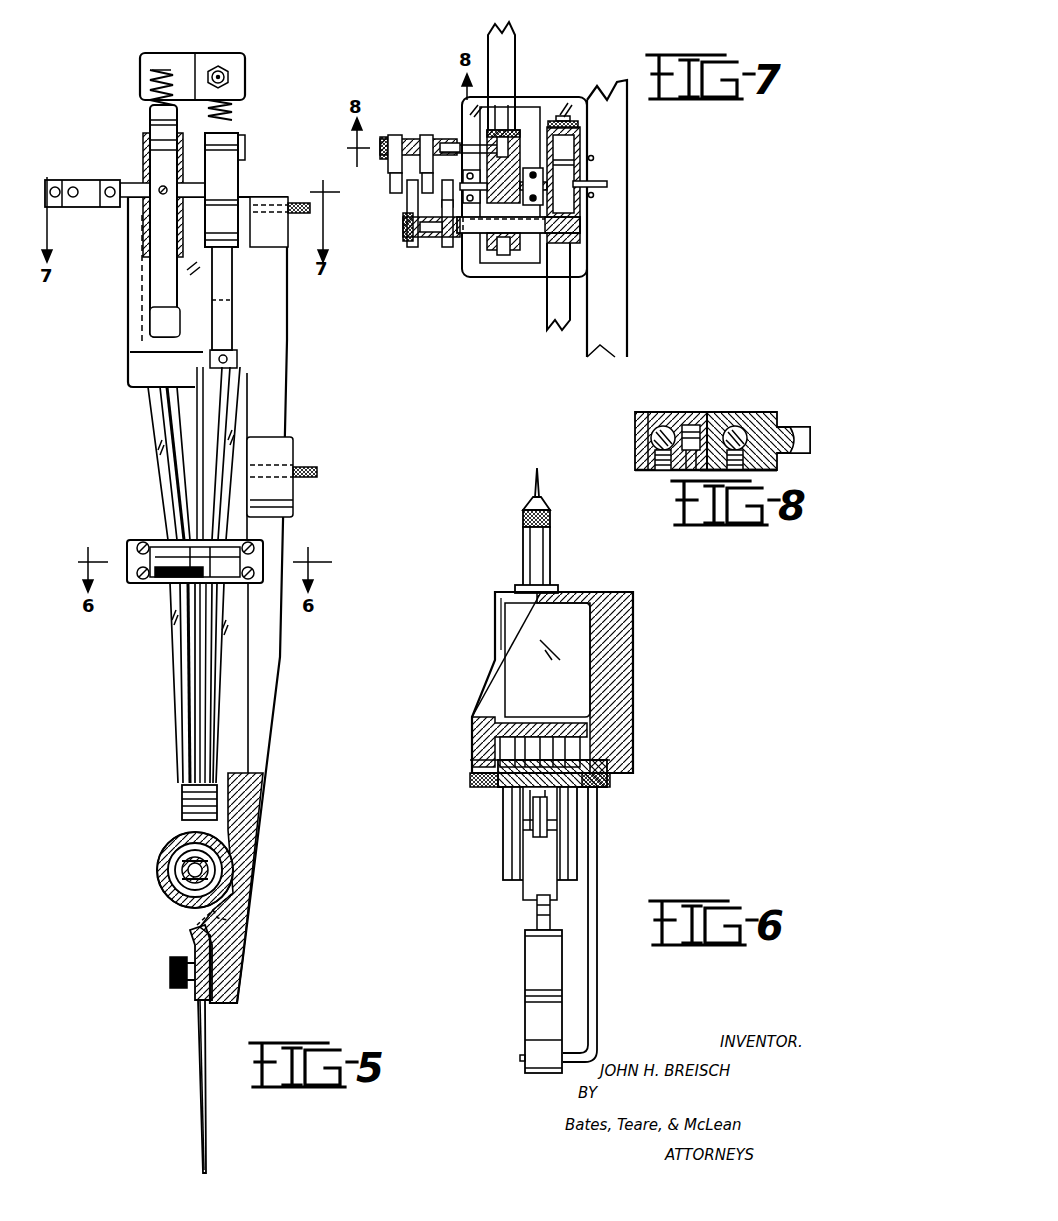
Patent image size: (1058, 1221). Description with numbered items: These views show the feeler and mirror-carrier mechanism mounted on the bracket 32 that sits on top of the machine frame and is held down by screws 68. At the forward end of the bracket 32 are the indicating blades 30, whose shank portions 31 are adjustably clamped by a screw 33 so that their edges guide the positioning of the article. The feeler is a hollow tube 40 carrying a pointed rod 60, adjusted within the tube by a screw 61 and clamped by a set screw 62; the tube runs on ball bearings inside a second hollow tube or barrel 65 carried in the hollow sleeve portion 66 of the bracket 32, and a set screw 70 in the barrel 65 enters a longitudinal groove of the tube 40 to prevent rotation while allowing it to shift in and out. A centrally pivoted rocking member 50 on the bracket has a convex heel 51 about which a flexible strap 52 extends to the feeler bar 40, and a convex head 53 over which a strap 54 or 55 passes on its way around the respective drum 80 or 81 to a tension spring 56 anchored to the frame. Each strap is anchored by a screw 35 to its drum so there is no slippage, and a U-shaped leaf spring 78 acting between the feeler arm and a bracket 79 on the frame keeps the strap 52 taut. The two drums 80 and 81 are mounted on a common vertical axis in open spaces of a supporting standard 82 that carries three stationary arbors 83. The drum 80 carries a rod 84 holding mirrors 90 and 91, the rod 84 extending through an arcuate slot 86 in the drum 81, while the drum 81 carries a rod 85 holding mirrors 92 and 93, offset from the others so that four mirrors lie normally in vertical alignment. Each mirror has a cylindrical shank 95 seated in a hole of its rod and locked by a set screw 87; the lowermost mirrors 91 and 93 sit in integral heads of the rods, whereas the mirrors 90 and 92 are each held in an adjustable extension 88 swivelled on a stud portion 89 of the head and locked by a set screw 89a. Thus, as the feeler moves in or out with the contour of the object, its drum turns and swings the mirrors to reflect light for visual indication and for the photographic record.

In FIG. 5, the indicating blades 30 is at (200, 1030).
In FIG. 5, the shank portions 31 is at (197, 990).
In FIG. 5, the bracket 32 is at (280, 355).
In FIG. 7, the bracket 32 is at (630, 150).
In FIG. 6, the bracket 32 is at (633, 658).
In FIG. 5, the screw 33 is at (170, 970).
In FIG. 5, the screw 35 is at (165, 188).
In FIG. 7, the screw 35 is at (560, 118).
In FIG. 5, the feeler 40 is at (185, 870).
In FIG. 6, the feeler 40 is at (551, 550).
In FIG. 5, the rocking member 50 is at (233, 403).
In FIG. 6, the rocking member 50 is at (503, 800).
In FIG. 5, the convex heel 51 is at (155, 436).
In FIG. 6, the convex heel 51 is at (525, 835).
In FIG. 6, the flexible strap 52 is at (540, 895).
In FIG. 5, the convex head 53 is at (158, 323).
In FIG. 5, the strap 54 is at (225, 270).
In FIG. 7, the strap 54 is at (560, 297).
In FIG. 5, the strap 55 is at (160, 277).
In FIG. 7, the strap 55 is at (515, 58).
In FIG. 5, the tension spring 56 is at (150, 92).
In FIG. 6, the pointed rod 60 is at (540, 475).
In FIG. 5, the screw 61 is at (215, 870).
In FIG. 6, the set screw 62 is at (551, 518).
In FIG. 5, the second hollow tube 65 is at (182, 887).
In FIG. 6, the second hollow tube 65 is at (560, 588).
In FIG. 5, the hollow sleeve portion 66 is at (180, 900).
In FIG. 6, the hollow sleeve portion 66 is at (507, 840).
In FIG. 5, the screws 68 is at (300, 203).
In FIG. 5, the set screw 70 is at (178, 853).
In FIG. 6, the U-shaped leaf spring 78 is at (528, 955).
In FIG. 6, the bracket 79 is at (597, 890).
In FIG. 5, the drum 80 is at (222, 163).
In FIG. 7, the drum 80 is at (580, 222).
In FIG. 5, the drum 81 is at (146, 160).
In FIG. 7, the drum 81 is at (515, 125).
In FIG. 7, the supporting standard 82 is at (503, 258).
In FIG. 7, the stationary arbors 83 is at (560, 178).
In FIG. 5, the rod 84 is at (135, 200).
In FIG. 7, the rod 84 is at (460, 235).
In FIG. 7, the rod 85 is at (460, 140).
In FIG. 8, the rod 85 is at (760, 418).
In FIG. 7, the arcuate slot 86 is at (518, 255).
In FIG. 8, the set screws 87 is at (662, 472).
In FIG. 8, the adjustable extension 88 is at (652, 412).
In FIG. 8, the stud portion 89 is at (692, 425).
In FIG. 8, the set screw 89a is at (700, 474).
In FIG. 5, the mirror 90 is at (73, 187).
In FIG. 7, the mirror 90 is at (410, 195).
In FIG. 5, the mirror 91 is at (110, 187).
In FIG. 7, the mirror 91 is at (470, 150).
In FIG. 5, the mirror 92 is at (55, 187).
In FIG. 7, the mirror 92 is at (390, 185).
In FIG. 7, the mirror 93 is at (444, 185).
In FIG. 7, the cylindrical shank 95 is at (422, 138).
In FIG. 8, the cylindrical shank 95 is at (737, 425).